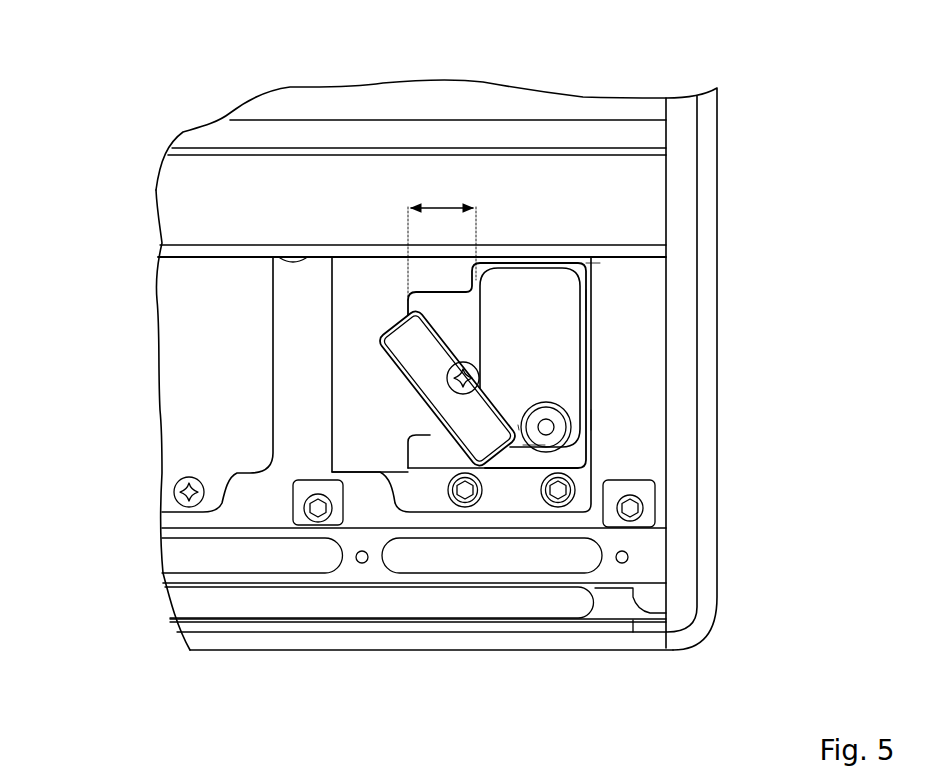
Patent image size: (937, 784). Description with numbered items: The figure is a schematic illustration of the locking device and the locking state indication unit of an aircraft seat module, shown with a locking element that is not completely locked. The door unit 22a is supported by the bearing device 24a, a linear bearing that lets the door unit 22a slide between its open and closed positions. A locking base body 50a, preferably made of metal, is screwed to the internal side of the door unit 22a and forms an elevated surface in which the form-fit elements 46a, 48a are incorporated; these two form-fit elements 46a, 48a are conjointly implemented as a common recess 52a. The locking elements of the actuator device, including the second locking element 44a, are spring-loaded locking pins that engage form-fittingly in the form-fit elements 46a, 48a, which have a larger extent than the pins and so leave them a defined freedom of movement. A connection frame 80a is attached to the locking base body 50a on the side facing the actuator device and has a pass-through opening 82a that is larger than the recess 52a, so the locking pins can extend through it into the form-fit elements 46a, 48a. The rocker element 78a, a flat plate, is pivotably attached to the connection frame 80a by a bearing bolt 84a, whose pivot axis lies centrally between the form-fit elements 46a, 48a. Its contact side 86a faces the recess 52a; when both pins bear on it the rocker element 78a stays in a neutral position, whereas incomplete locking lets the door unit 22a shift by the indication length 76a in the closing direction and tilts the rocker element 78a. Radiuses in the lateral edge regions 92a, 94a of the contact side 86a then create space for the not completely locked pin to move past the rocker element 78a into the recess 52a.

The door unit 22a is at (335, 110).
The bearing device 24a is at (134, 579).
The second locking element 44a is at (523, 445).
The form-fit element 46a is at (592, 300).
The form-fit element 48a is at (600, 422).
The locking base body 50a is at (585, 328).
The common recess 52a is at (594, 268).
The indication length 76a is at (437, 207).
The rocker element 78a is at (427, 387).
The connection frame 80a is at (433, 470).
The pass-through opening 82a is at (485, 272).
The bearing bolt 84a is at (460, 337).
The contact side 86a is at (480, 366).
The lateral edge region 92a is at (373, 338).
The lateral edge region 94a is at (518, 425).